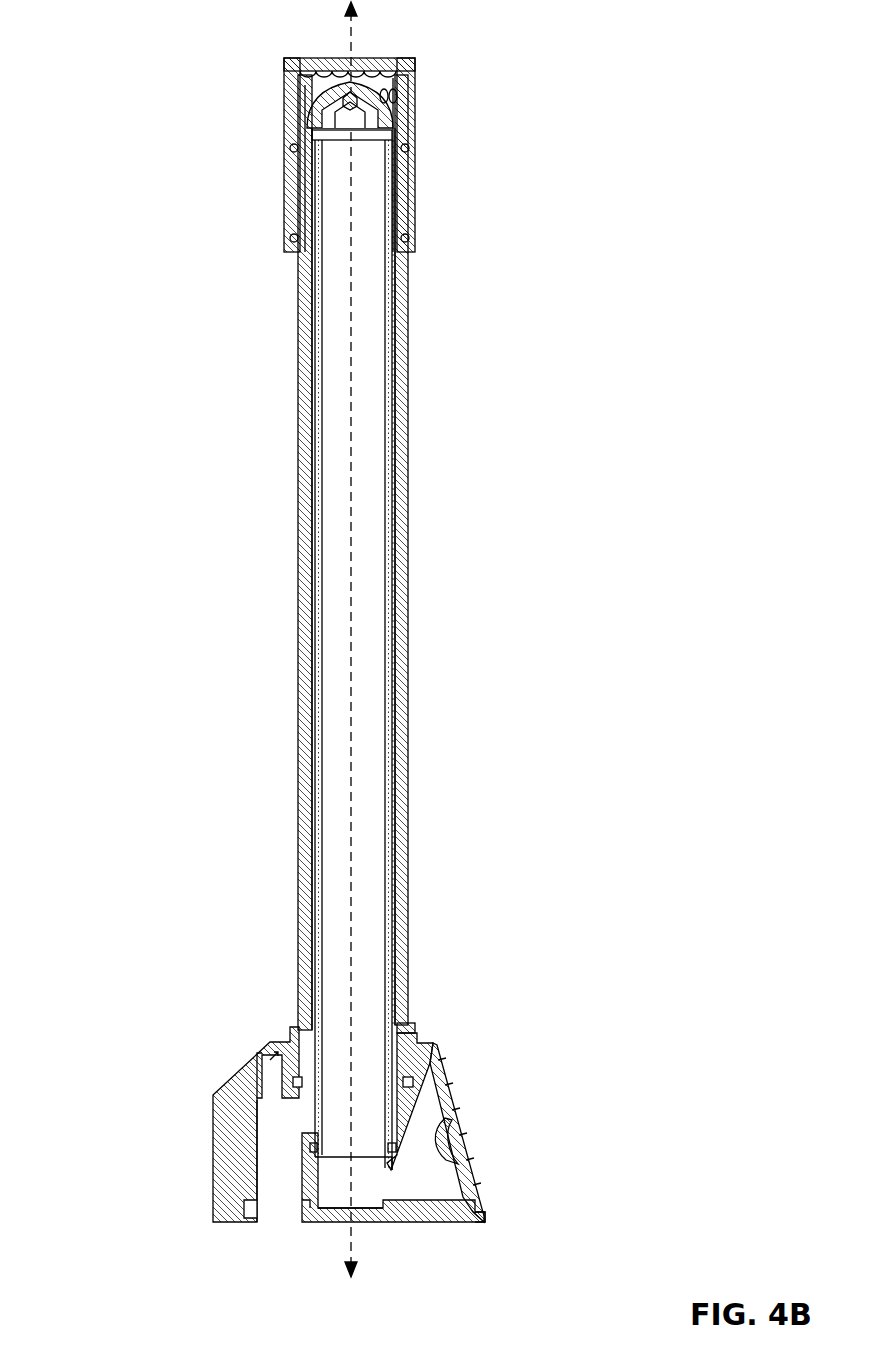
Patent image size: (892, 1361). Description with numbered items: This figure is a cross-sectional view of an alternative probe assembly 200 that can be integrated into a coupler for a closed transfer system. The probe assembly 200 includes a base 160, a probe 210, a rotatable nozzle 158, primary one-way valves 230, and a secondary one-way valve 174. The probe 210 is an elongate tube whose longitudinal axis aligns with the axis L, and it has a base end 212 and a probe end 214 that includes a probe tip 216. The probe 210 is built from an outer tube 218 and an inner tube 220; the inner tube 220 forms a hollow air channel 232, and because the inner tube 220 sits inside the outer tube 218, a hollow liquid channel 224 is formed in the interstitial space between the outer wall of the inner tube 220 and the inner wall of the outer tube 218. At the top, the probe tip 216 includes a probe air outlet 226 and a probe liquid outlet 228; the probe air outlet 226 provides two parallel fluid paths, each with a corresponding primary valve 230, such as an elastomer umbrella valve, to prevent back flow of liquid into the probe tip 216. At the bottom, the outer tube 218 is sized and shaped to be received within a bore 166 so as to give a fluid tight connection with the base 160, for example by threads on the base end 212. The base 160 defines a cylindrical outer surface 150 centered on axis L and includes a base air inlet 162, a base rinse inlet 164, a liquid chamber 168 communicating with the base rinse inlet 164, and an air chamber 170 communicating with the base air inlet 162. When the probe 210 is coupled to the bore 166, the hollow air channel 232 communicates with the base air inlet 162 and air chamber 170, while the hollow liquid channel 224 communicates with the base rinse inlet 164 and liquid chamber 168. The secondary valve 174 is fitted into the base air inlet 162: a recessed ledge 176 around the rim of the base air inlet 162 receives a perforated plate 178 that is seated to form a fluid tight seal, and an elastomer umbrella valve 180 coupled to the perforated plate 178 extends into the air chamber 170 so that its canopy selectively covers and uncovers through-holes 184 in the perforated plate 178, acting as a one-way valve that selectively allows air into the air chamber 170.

The probe assembly 200 is at (163, 52).
The probe end 214 is at (270, 218).
The rotatable nozzle 158 is at (407, 190).
The primary valve 230 is at (330, 95).
The probe air outlet 226 is at (367, 135).
The probe liquid outlet 228 is at (310, 218).
The probe tip 216 is at (368, 168).
The probe 210 is at (300, 432).
The hollow liquid channel 224 is at (312, 492).
The inner tube 220 is at (395, 322).
The outer tube 218 is at (393, 282).
The hollow air channel 232 is at (333, 535).
The base end 212 is at (270, 966).
The cylindrical outer surface 150 is at (212, 1170).
The base 160 is at (225, 1137).
The liquid chamber 168 is at (270, 1175).
The base rinse inlet 164 is at (268, 1213).
The base air inlet 162 is at (432, 1188).
The air chamber 170 is at (372, 1200).
The recessed ledge 176 is at (478, 1222).
The secondary valve 174 is at (482, 1161).
The bore 166 is at (403, 1030).
The perforated plate 178 is at (440, 1075).
The through-holes 184 is at (448, 1107).
The umbrella valve 180 is at (460, 1140).